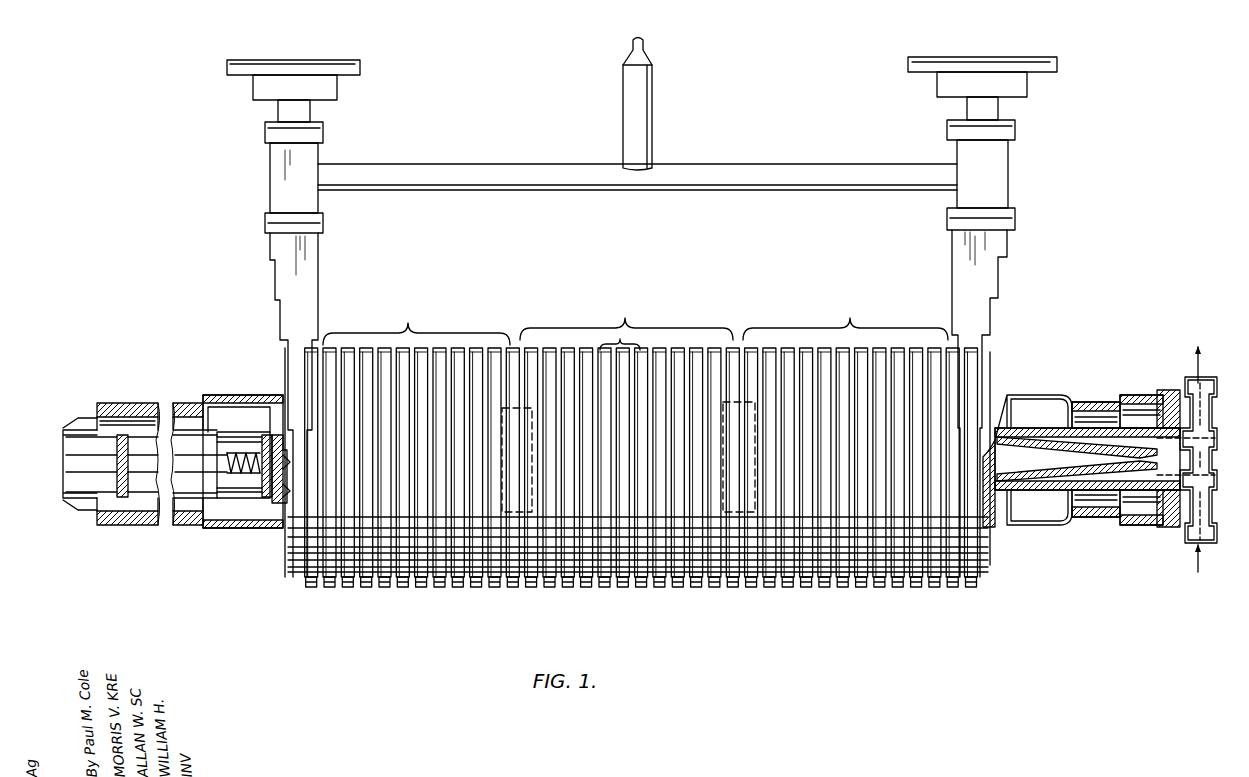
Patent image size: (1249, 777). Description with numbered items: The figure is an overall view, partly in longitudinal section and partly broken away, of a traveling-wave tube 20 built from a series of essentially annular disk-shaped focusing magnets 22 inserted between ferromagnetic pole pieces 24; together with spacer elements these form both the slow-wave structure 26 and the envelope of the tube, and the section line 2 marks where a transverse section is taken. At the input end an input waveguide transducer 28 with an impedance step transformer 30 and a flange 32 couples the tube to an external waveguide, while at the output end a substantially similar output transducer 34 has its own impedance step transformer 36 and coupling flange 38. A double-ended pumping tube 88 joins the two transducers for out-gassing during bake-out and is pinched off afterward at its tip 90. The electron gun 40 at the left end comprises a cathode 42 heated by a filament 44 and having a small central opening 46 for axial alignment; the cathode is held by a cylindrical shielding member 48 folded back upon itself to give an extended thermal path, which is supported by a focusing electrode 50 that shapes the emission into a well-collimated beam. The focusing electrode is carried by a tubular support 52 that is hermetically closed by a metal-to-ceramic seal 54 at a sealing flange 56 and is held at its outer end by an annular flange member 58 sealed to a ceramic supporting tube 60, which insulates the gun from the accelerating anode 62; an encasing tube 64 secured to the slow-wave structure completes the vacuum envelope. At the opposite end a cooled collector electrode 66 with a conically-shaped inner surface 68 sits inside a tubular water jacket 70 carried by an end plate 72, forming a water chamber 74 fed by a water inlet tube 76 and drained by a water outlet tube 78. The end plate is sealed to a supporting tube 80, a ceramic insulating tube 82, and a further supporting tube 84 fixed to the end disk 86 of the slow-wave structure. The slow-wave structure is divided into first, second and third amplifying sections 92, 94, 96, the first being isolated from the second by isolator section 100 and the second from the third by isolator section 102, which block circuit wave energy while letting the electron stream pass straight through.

The section line 2- 2 is at (298, 315).
The traveling-wave tube 20 is at (252, 343).
The focusing magnets 22 is at (665, 585).
The pole pieces 24 is at (620, 340).
The slow-wave structure 26 is at (515, 592).
The input waveguide transducer 28 is at (320, 203).
The impedance step transformer 30 is at (273, 278).
The flange 32 is at (362, 67).
The output transducer 34 is at (955, 200).
The impedance step transformer 36 is at (998, 288).
The coupling flange 38 is at (1057, 63).
The electron gun 40 is at (198, 530).
The cathode 42 is at (262, 478).
The filament 44 is at (225, 478).
The central opening 46 is at (252, 475).
The cylindrical shielding member 48 is at (229, 452).
The focusing electrode 50 is at (284, 428).
The tubular support 52 is at (238, 452).
The metal-to-ceramic seal 54 is at (127, 492).
The sealing flange 56 is at (112, 510).
The annular flange member 58 is at (80, 505).
The ceramic supporting tube 60 is at (183, 403).
The accelerating anode 62 is at (284, 500).
The tube 64 is at (217, 395).
The collector electrode 66 is at (1013, 482).
The conically-shaped inner surface 68 is at (1048, 483).
The tubular water jacket 70 is at (1096, 508).
The end plate 72 is at (1158, 528).
The water chamber 74 is at (1138, 498).
The water inlet tube 76 is at (1192, 546).
The water outlet tube 78 is at (1215, 383).
The supporting tube 80 is at (1130, 397).
The ceramic insulating tube 82 is at (1088, 402).
The supporting tube 84 is at (1045, 395).
The end disk 86 is at (985, 562).
The pumping tube 88 is at (645, 128).
The tip 90 is at (643, 57).
The first amplifying section 92 is at (416, 323).
The second amplifying section 94 is at (626, 319).
The third amplifying section 96 is at (845, 320).
The isolator section 100 is at (510, 497).
The isolator section 102 is at (738, 500).